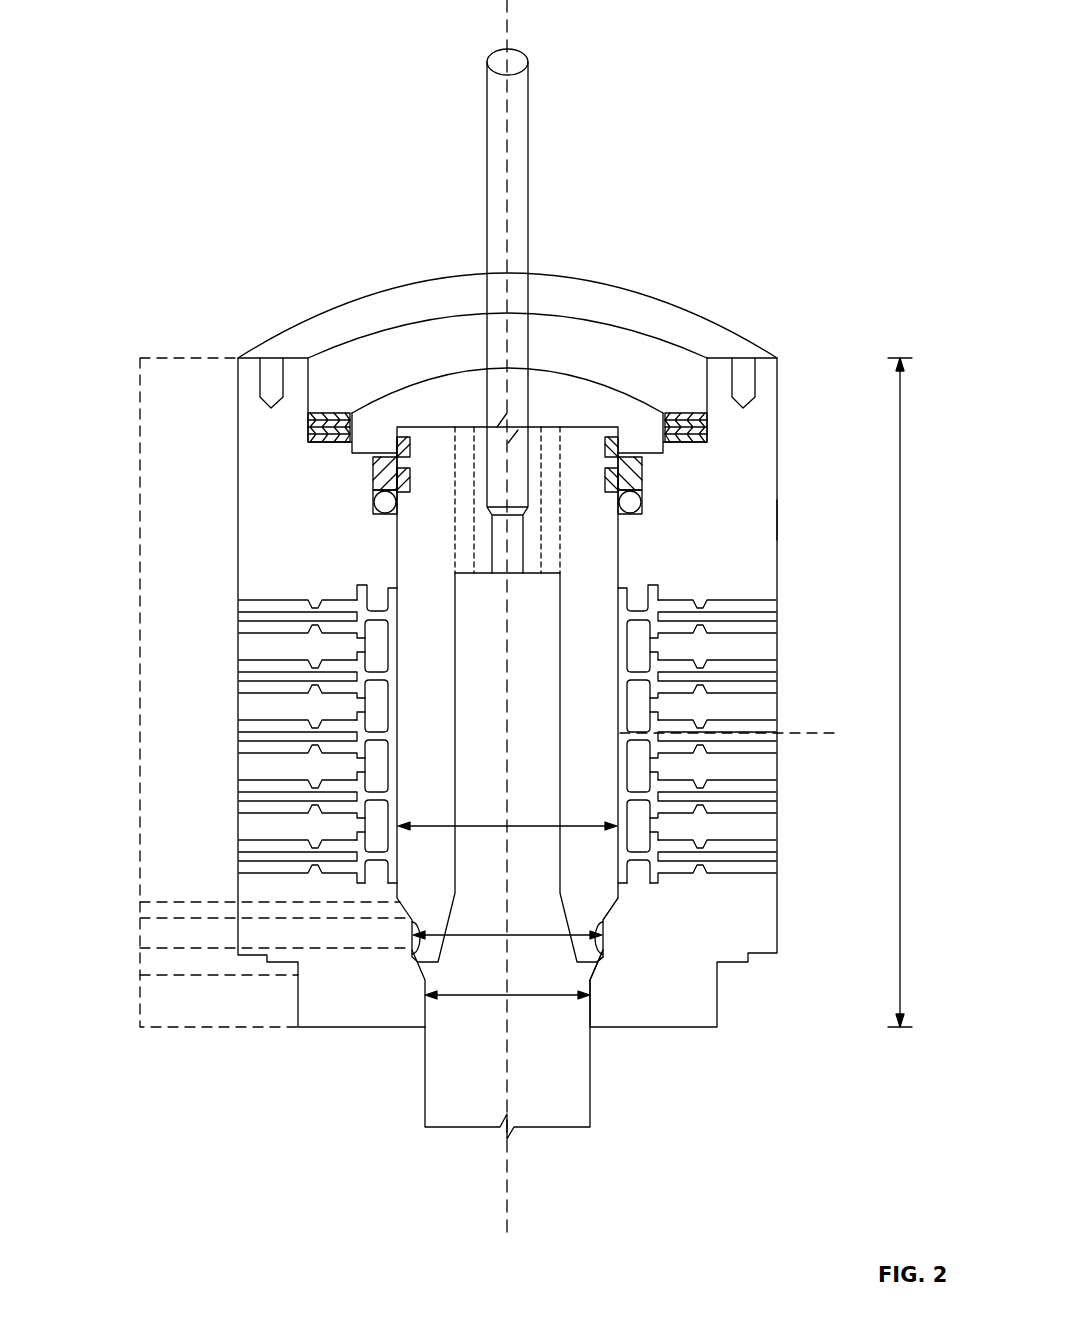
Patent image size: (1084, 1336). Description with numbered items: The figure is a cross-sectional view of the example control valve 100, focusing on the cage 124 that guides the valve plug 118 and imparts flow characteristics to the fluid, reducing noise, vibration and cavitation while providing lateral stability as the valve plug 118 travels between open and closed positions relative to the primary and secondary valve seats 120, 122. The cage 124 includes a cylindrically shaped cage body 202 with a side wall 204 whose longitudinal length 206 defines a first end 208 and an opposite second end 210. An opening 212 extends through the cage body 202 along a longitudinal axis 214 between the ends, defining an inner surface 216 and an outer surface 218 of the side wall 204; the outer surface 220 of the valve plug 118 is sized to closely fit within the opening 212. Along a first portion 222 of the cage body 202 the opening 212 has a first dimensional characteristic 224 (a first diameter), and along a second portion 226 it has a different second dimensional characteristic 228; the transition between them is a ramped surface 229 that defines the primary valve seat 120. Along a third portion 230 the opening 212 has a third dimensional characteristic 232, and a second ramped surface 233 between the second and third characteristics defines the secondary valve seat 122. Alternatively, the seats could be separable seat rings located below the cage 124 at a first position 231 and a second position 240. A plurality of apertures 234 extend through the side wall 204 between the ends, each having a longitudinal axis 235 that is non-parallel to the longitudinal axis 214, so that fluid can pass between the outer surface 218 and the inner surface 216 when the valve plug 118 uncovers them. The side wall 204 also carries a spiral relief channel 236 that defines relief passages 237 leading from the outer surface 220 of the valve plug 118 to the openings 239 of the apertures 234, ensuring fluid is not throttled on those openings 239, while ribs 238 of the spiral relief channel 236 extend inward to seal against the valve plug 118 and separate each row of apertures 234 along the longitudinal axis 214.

The control valve 100 is at (259, 129).
The valve plug 118 is at (430, 712).
The primary valve seat 120 is at (598, 962).
The secondary valve seat 122 is at (617, 917).
The cage 124 is at (752, 699).
The cage body 202 is at (302, 497).
The side wall 204 is at (740, 488).
The longitudinal length 206 is at (901, 690).
The first end 208 is at (702, 330).
The second end 210 is at (372, 1028).
The opening 212 is at (563, 421).
The longitudinal axis 214 is at (507, 1177).
The inner surface 216 is at (398, 512).
The outer surface 218 is at (778, 518).
The outer surface of the valve plug 220 is at (611, 642).
The first portion 222 is at (140, 1000).
The first dimensional characteristic 224 is at (548, 997).
The second portion 226 is at (140, 937).
The second dimensional characteristic 228 is at (535, 932).
The ramped surface 229 is at (598, 957).
The third portion 230 is at (138, 627).
The first position 231 is at (140, 958).
The third dimensional characteristic 232 is at (535, 826).
The second ramped surface 233 is at (613, 912).
The apertures 234 is at (747, 606).
The longitudinal axis of the apertures 235 is at (815, 733).
The spiral relief channel 236 is at (377, 596).
The relief passages 237 is at (392, 741).
The ribs 238 is at (392, 648).
The openings of the apertures 239 is at (373, 733).
The second position 240 is at (140, 905).